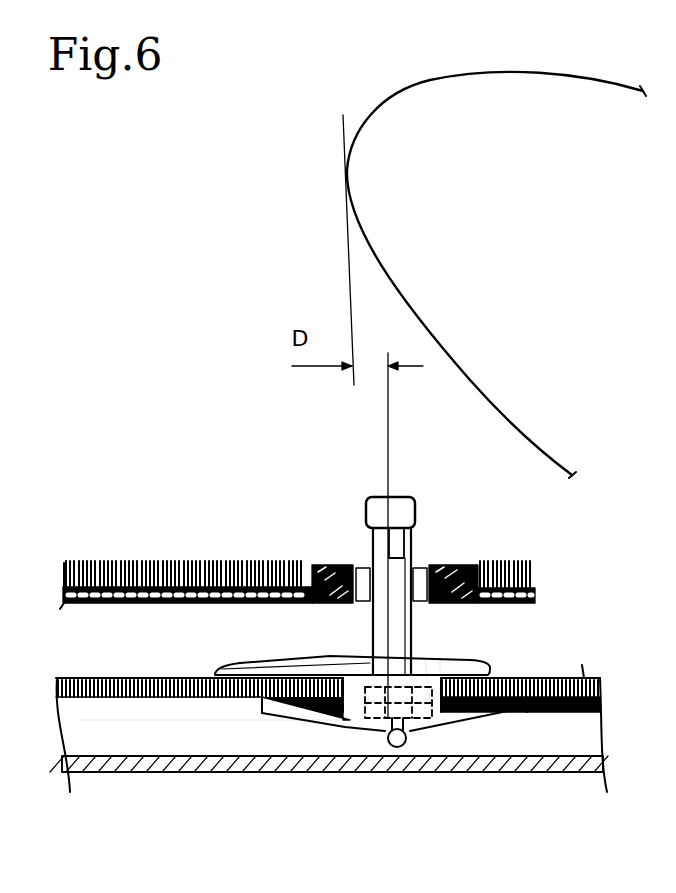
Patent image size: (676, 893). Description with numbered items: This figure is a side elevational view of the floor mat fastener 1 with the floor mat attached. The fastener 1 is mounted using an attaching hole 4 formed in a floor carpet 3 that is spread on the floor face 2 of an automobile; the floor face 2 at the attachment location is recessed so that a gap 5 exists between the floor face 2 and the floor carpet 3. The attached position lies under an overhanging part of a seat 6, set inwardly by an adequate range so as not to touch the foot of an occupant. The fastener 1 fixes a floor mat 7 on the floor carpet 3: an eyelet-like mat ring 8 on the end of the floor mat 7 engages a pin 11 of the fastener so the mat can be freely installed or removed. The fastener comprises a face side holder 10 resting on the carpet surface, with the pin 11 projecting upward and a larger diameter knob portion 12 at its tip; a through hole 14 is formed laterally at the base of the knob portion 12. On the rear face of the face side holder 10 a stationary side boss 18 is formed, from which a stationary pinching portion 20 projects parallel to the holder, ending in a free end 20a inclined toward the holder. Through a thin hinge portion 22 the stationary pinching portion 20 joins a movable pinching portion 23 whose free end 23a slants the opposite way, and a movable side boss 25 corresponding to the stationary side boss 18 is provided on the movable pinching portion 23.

The fastener 1 is at (250, 481).
The floor face 2 is at (290, 775).
The floor carpet 3 is at (120, 678).
The attaching hole 4 is at (452, 658).
The gap 5 is at (162, 742).
The seat 6 is at (390, 103).
The floor mat 7 is at (147, 567).
The mat ring 8 is at (428, 550).
The face side holder 10 is at (290, 660).
The pin 11 is at (366, 548).
The knob portion 12 is at (407, 503).
The through hole 14 is at (420, 530).
The stationary side boss 18 is at (430, 657).
The stationary pinching portion 20 is at (440, 731).
The free end 20a is at (518, 715).
The thin hinge portion 22 is at (396, 750).
The movable pinching portion 23 is at (345, 730).
The free end 23a is at (267, 714).
The movable side boss 25 is at (365, 690).